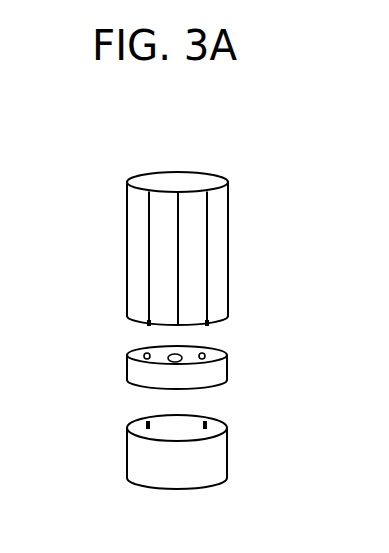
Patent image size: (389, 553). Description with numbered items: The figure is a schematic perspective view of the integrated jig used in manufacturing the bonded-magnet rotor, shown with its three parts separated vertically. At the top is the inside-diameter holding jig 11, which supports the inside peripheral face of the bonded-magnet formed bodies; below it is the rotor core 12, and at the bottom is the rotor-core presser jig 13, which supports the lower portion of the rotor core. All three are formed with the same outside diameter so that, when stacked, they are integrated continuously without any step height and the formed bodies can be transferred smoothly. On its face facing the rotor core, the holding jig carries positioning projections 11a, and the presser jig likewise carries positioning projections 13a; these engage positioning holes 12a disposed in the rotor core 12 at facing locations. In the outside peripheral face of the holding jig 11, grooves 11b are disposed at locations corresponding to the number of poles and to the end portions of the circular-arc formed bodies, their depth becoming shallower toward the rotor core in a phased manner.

The inside-diameter holding jig 11 is at (142, 239).
The positioning projections 11a is at (210, 324).
The grooves 11b is at (210, 223).
The rotor core 12 is at (143, 373).
The positioning holes 12a is at (145, 353).
The rotor-core presser jig 13 is at (143, 463).
The positioning projections 13a is at (223, 421).